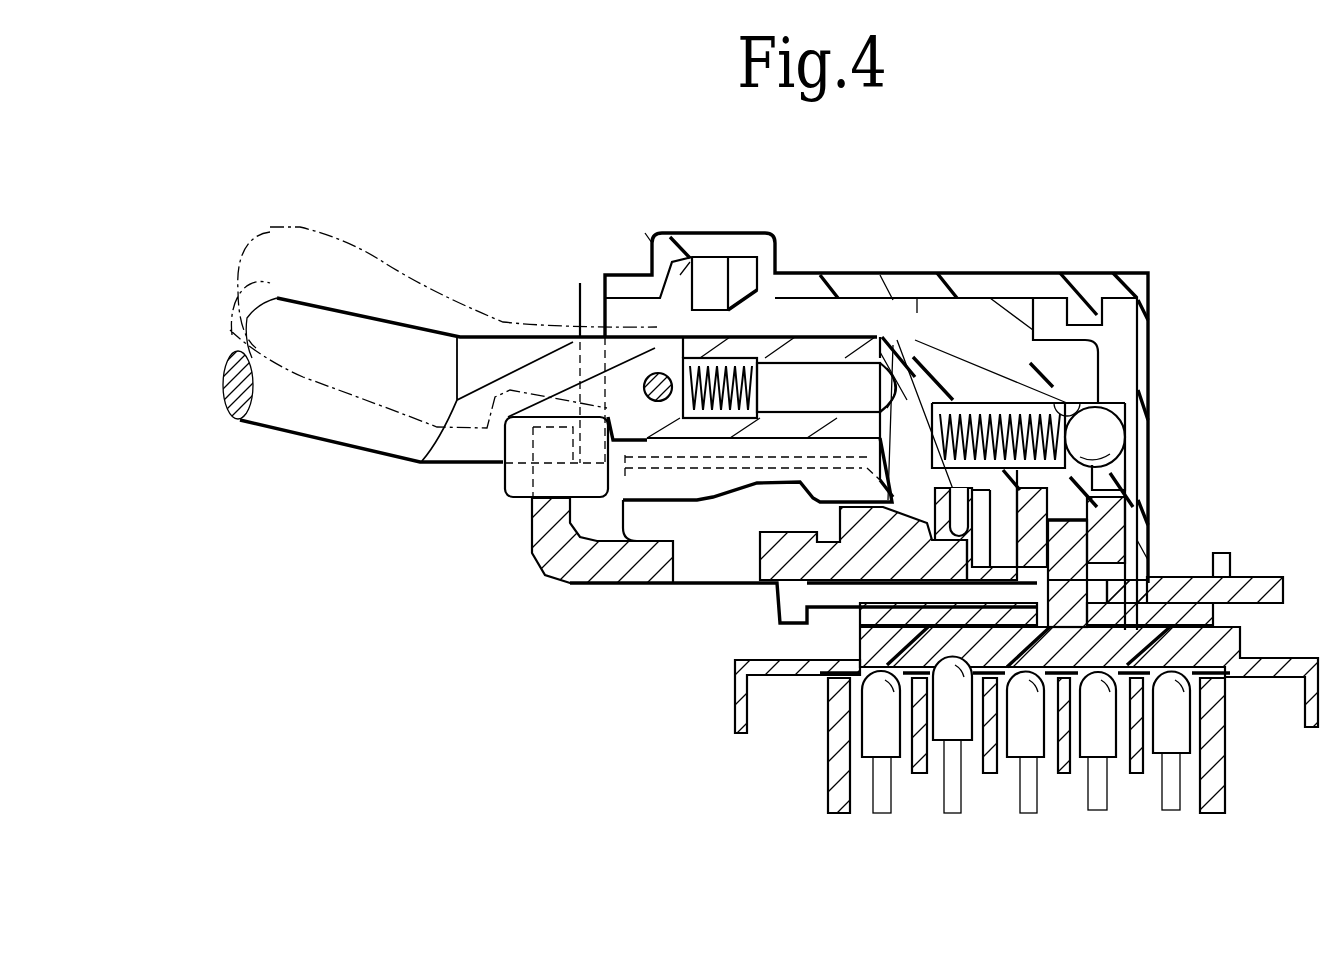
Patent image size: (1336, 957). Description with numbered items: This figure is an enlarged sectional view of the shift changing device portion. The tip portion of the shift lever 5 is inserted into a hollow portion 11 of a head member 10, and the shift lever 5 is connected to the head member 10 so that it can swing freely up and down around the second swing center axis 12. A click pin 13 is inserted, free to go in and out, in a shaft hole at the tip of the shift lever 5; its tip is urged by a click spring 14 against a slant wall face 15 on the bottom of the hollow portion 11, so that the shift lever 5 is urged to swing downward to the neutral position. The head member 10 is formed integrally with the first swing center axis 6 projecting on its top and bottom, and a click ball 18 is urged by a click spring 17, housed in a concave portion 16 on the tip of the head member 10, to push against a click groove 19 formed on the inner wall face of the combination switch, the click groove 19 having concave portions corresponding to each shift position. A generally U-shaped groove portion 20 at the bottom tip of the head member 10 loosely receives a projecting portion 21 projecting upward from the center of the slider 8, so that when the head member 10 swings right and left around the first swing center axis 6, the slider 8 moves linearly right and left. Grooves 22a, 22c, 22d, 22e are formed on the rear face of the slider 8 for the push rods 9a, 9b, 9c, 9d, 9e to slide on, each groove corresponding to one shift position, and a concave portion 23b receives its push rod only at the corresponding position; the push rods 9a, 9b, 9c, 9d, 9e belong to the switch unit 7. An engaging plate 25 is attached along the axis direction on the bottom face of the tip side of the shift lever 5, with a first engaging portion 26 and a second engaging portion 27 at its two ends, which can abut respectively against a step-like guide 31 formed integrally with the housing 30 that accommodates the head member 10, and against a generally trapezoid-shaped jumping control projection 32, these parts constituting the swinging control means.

The shift lever 5 is at (348, 430).
The first swing center axis 6 is at (680, 275).
The light emitting unit 7 is at (798, 797).
The slider 8 is at (1207, 650).
The push rod 9a is at (867, 733).
The push rod 9b is at (938, 728).
The push rod 9c is at (1012, 750).
The push rod 9d is at (1090, 740).
The push rod 9e is at (1170, 737).
The head member 10 is at (917, 313).
The hollow portion 11 is at (1017, 400).
The second swing center axis 12 is at (660, 384).
The click pin 13 is at (813, 373).
The click spring 14 is at (730, 367).
The slant wall face 15 is at (857, 393).
The concave portion 16 is at (1067, 405).
The click spring 17 is at (1007, 340).
The click ball 18 is at (1117, 437).
The click groove 19 is at (1120, 410).
The groove portion 20 is at (1137, 500).
The projecting portion 21 is at (1080, 543).
The groove 22a is at (813, 653).
The groove 22c is at (1055, 740).
The groove 22d is at (1135, 740).
The groove 22e is at (1213, 680).
The concave portion 23b is at (790, 633).
The engaging plate 25 is at (640, 583).
The first engaging portion 26 is at (505, 483).
The second engaging portion 27 is at (823, 483).
The housing 30 is at (558, 580).
The step-like guide 31 is at (514, 513).
The jumping control projection 32 is at (837, 517).